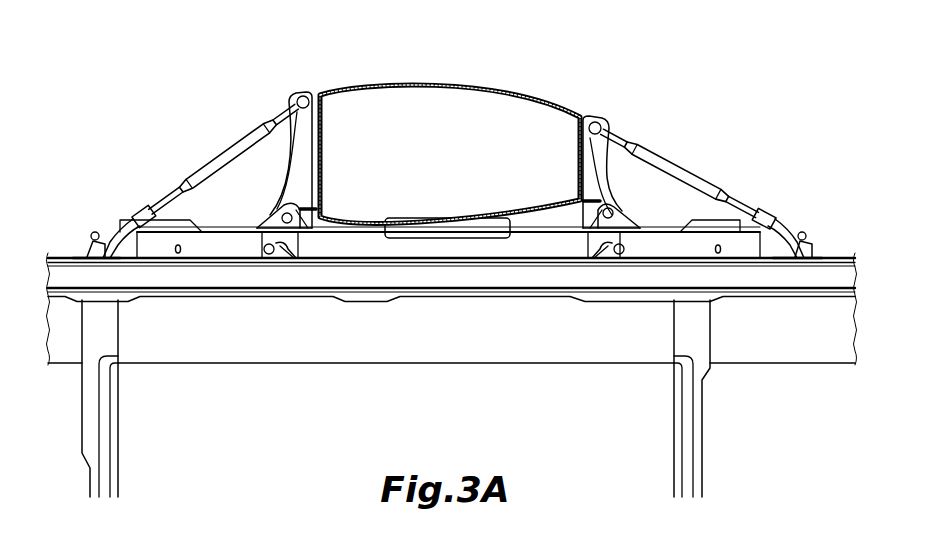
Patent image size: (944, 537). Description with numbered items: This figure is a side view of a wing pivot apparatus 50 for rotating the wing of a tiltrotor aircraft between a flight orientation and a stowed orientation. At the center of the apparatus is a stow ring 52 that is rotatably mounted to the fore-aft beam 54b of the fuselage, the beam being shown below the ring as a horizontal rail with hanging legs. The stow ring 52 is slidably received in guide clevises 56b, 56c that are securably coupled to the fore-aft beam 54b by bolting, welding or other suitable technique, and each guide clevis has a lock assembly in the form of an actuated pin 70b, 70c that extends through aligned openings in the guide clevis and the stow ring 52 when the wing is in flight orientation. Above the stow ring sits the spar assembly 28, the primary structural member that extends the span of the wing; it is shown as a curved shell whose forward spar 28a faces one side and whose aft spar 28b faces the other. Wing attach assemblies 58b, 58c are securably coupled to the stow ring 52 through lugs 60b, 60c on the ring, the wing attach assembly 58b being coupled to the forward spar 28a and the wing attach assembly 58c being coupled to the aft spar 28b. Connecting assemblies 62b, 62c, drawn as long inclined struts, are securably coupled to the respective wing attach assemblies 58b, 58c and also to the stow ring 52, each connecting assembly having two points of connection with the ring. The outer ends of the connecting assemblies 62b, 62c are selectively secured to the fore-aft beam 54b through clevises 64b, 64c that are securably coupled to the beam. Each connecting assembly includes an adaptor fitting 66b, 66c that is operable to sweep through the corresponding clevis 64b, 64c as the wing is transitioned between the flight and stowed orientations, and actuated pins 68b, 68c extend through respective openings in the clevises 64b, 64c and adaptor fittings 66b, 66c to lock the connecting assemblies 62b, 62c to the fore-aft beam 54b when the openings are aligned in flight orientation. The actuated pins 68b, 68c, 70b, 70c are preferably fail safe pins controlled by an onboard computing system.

The spar assembly 28 is at (470, 86).
The forward spar 28a is at (323, 160).
The aft spar 28b is at (578, 152).
The wing pivot apparatus 50 is at (660, 107).
The stow ring 52 is at (481, 250).
The fore-aft beam 54b is at (360, 272).
The guide clevis 56b is at (289, 257).
The guide clevis 56c is at (612, 258).
The wing attach assembly 58b is at (306, 96).
The wing attach assembly 58c is at (596, 121).
The lug 60b is at (279, 215).
The lug 60c is at (625, 213).
The connecting assembly 62b is at (208, 173).
The connecting assembly 62c is at (697, 176).
The clevis 64b is at (88, 254).
The clevis 64c is at (805, 254).
The adaptor fitting 66b is at (128, 219).
The adaptor fitting 66c is at (760, 220).
The actuated pin 68b is at (93, 233).
The actuated pin 68c is at (797, 234).
The actuated pin 70b is at (273, 256).
The actuated pin 70c is at (624, 256).